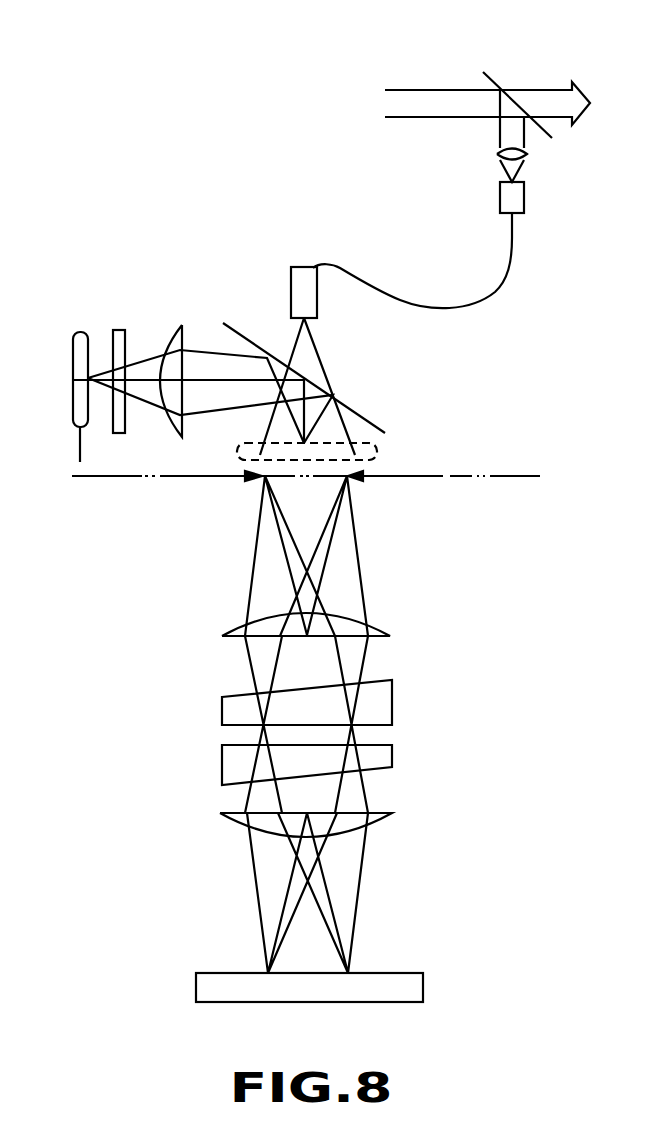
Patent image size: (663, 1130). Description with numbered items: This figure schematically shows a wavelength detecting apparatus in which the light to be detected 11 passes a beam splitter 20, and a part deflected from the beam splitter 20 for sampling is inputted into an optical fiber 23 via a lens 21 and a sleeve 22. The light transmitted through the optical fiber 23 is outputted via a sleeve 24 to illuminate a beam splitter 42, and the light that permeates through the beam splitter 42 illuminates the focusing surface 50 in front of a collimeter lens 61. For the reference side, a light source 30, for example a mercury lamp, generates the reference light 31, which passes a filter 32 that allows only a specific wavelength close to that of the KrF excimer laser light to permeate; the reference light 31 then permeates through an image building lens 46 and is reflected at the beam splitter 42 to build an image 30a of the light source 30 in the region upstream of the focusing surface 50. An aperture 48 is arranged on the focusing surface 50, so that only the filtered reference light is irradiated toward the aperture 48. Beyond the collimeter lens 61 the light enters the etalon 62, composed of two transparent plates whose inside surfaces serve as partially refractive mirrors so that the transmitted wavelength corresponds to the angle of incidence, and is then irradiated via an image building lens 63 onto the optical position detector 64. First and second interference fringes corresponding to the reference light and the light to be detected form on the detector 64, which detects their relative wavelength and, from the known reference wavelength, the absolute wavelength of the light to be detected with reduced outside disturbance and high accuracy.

The light beam 11 is at (400, 88).
The beam splitter 20 is at (498, 85).
The lens 21 is at (527, 154).
The sleeve 22 is at (524, 200).
The optical fiber 23 is at (500, 287).
The sleeve 24 is at (317, 305).
The light source 30 is at (70, 353).
The image 30a is at (377, 452).
The reference light 31 is at (138, 360).
The filter 32 is at (117, 328).
The beam splitter 42 is at (363, 415).
The image building lens 46 is at (178, 323).
The aperture 48 is at (413, 478).
The focusing surface 50 is at (500, 475).
The collimeter lens 61 is at (373, 625).
The etalon 62 is at (397, 663).
The image building lens 63 is at (387, 815).
The optical position detector 64 is at (397, 972).